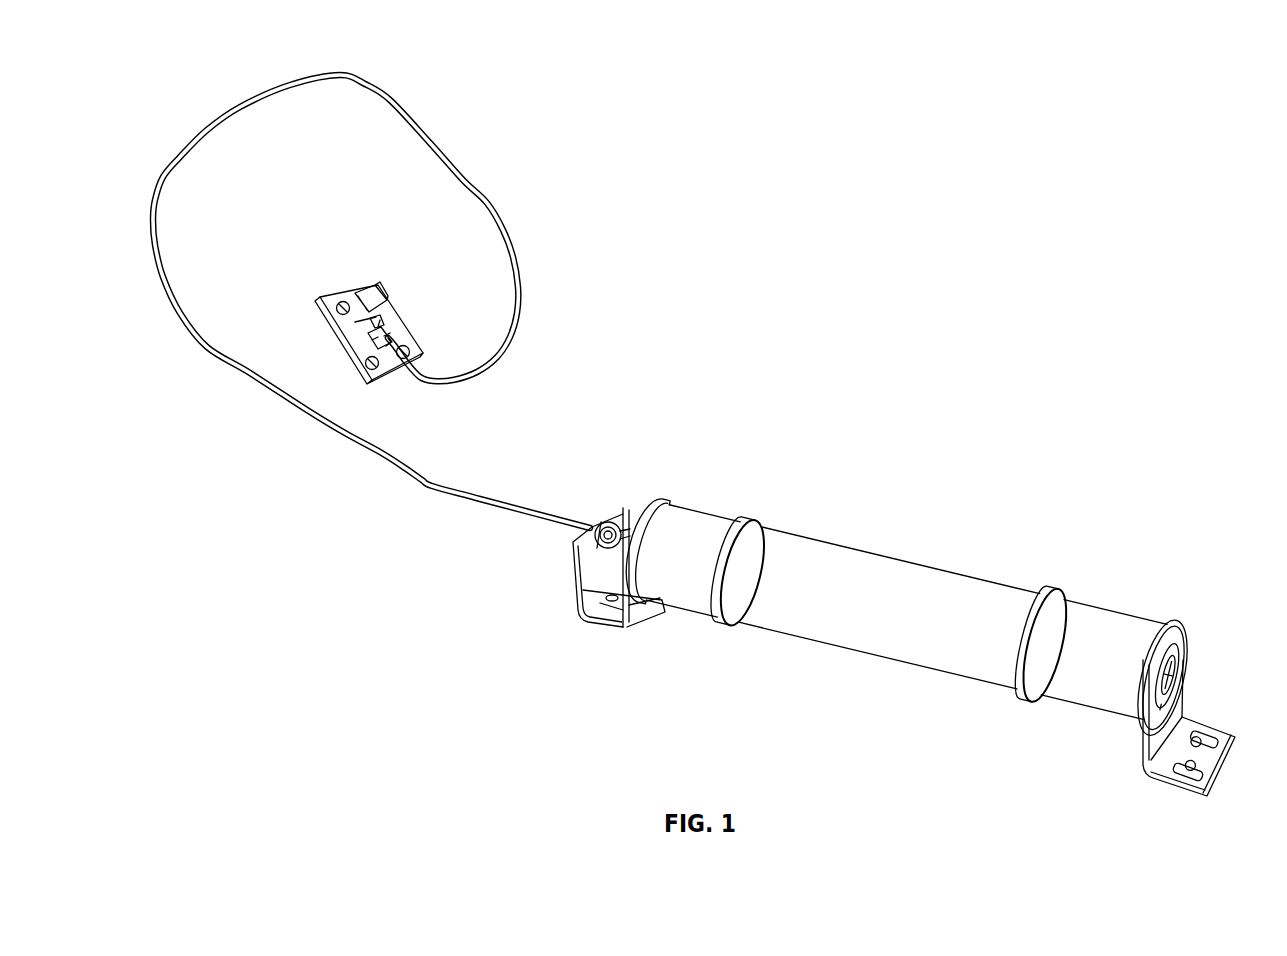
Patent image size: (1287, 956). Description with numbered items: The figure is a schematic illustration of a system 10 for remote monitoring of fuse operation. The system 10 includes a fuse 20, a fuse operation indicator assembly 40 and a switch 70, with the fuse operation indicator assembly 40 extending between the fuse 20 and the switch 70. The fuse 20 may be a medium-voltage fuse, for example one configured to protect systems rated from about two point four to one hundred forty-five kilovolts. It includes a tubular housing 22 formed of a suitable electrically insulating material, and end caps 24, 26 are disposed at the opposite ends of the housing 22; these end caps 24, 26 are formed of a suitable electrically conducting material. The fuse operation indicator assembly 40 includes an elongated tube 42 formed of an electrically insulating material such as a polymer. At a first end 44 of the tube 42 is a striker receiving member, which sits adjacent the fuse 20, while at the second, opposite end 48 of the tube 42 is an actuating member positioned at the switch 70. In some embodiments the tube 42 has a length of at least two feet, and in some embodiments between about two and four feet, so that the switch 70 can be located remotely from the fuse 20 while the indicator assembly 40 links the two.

The system 10 is at (1014, 197).
The fuse 20 is at (904, 623).
The tubular housing 22 is at (889, 608).
The end cap 24 is at (695, 561).
The end cap 26 is at (1102, 661).
The fuse operation indicator assembly 40 is at (374, 301).
The elongated tube 42 is at (439, 475).
The first end 44 is at (616, 518).
The second end 48 is at (359, 336).
The switch 70 is at (342, 301).